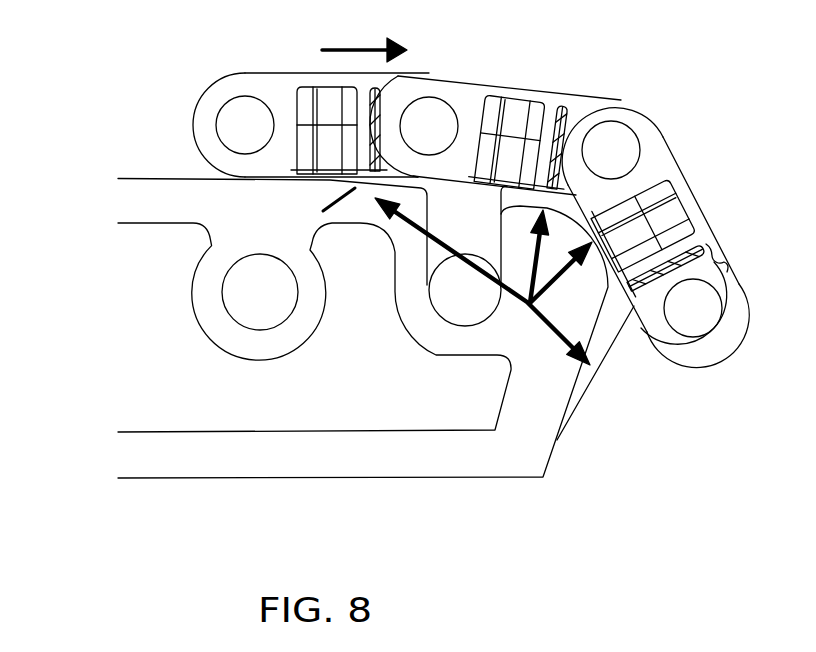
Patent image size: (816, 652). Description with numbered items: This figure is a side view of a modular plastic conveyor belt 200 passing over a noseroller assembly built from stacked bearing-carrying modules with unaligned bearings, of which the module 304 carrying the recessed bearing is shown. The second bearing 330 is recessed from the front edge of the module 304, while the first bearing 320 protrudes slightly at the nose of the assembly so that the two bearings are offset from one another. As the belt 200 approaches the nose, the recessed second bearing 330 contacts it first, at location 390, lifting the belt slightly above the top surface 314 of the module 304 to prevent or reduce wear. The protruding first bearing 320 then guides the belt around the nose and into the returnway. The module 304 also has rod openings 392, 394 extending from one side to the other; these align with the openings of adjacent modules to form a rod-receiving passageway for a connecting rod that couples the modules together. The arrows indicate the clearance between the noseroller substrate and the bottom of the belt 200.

The modular plastic conveyor belt 200 is at (513, 77).
The location 390 is at (460, 183).
The second module 304 is at (490, 448).
The top surface 314 is at (140, 177).
The second bearing 330 is at (482, 228).
The rod opening 392 is at (280, 308).
The rod opening 394 is at (440, 305).
The first bearing 320 is at (625, 340).